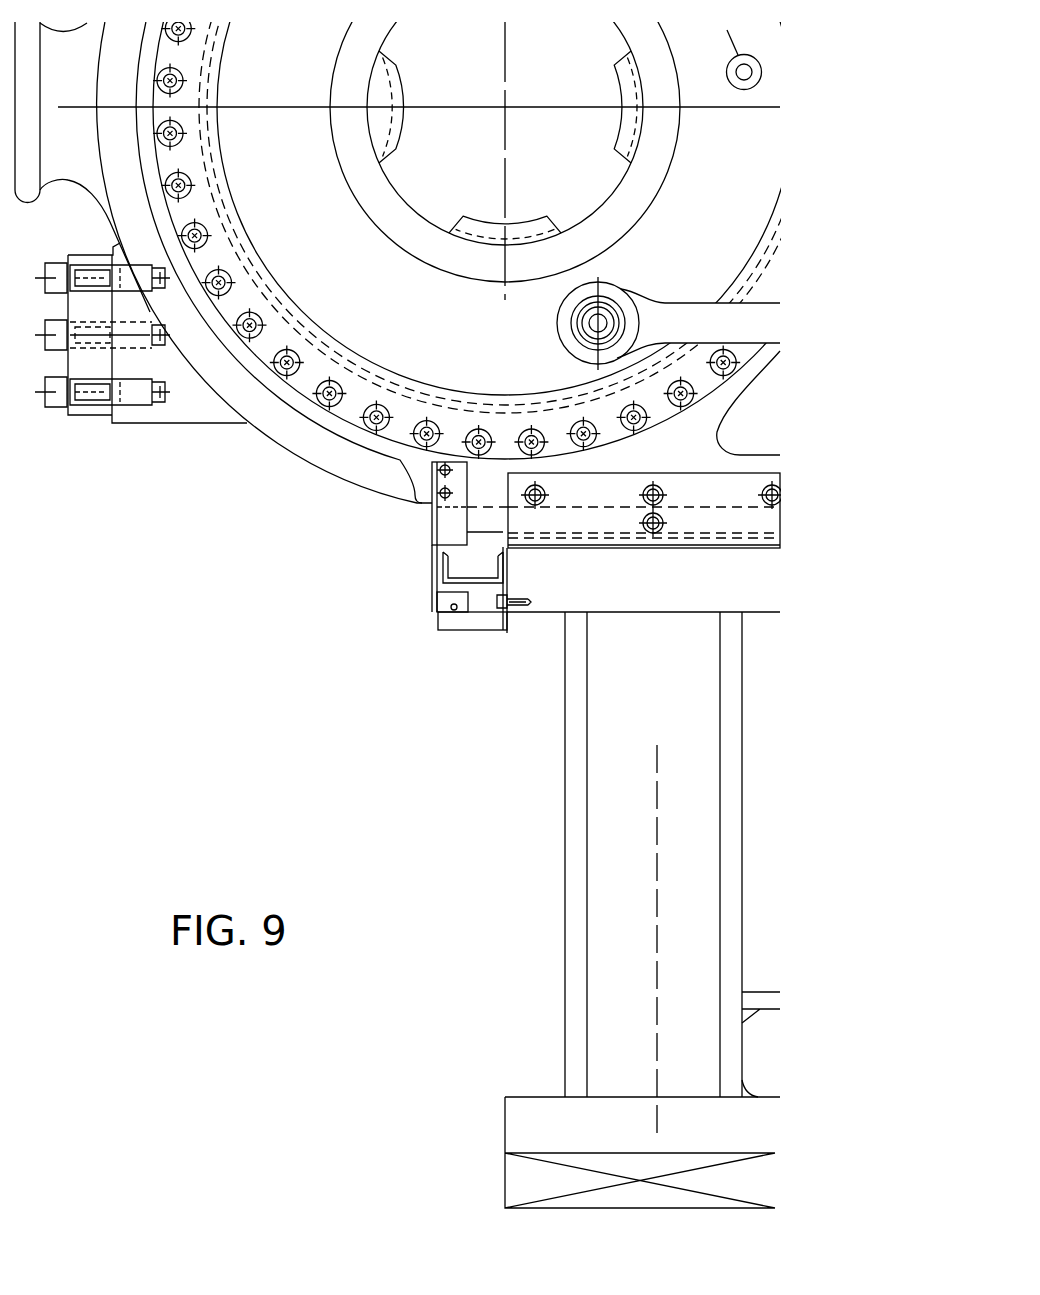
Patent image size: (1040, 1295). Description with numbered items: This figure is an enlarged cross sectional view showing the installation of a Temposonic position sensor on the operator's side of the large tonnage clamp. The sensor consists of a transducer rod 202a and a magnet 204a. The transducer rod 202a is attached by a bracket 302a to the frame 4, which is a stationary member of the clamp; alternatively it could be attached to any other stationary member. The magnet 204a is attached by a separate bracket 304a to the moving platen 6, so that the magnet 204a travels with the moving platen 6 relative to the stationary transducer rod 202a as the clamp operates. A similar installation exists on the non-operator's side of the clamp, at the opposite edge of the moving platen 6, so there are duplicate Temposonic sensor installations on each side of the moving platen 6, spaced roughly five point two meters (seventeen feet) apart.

The moving platen 6 is at (293, 411).
The frame 4 is at (612, 915).
The bracket 304a is at (431, 529).
The magnet 204a is at (442, 603).
The transducer rod 202a is at (453, 613).
The bracket 302a is at (497, 637).